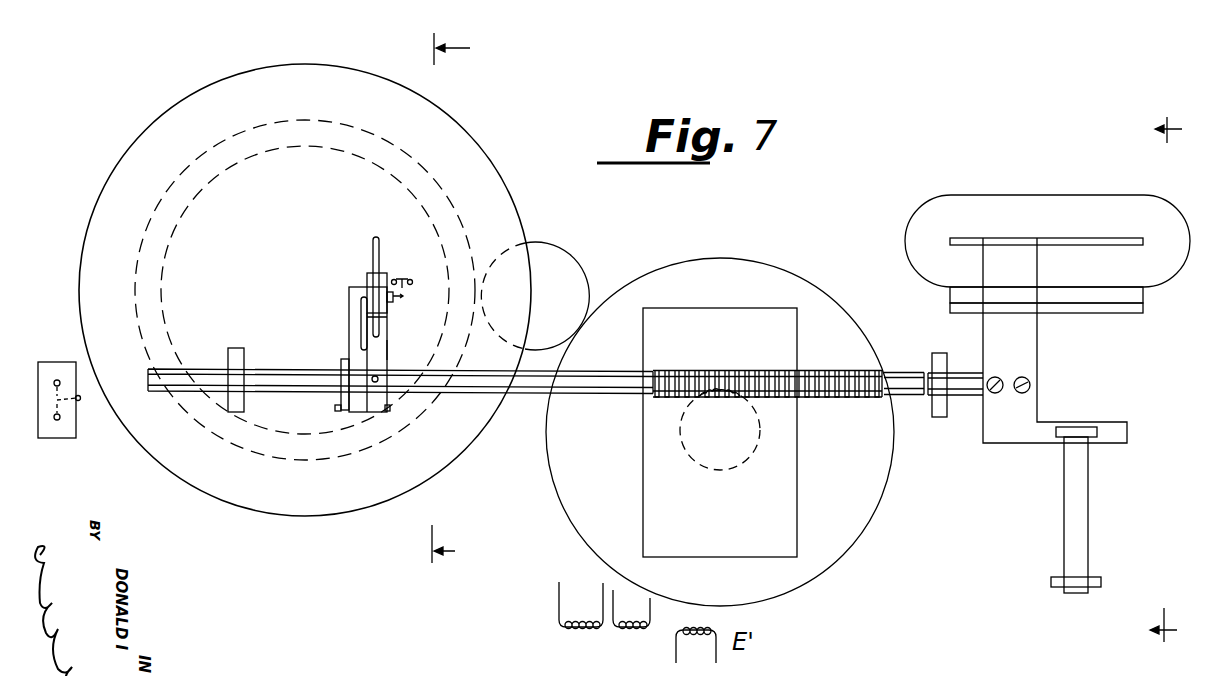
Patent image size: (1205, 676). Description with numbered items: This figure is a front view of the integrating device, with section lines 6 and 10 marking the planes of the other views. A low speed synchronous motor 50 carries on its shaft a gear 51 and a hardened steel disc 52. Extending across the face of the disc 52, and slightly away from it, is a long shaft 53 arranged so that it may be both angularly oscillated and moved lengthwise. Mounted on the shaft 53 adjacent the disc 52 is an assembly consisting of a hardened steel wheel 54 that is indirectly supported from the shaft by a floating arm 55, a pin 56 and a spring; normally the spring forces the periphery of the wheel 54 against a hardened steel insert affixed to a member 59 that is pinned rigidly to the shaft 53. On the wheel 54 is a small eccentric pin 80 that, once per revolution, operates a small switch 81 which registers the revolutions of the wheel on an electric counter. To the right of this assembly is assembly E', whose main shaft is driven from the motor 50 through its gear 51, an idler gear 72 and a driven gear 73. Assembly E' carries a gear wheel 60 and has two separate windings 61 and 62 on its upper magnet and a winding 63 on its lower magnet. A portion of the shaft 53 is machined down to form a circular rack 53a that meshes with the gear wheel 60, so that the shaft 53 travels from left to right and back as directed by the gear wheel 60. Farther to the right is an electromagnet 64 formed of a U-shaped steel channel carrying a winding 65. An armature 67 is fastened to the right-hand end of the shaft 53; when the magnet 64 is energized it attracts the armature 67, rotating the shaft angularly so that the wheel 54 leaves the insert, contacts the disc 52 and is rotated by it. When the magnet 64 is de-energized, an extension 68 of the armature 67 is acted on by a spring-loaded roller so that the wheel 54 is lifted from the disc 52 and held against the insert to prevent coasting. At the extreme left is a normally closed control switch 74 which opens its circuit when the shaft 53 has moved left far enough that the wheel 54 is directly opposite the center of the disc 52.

The low speed synchronous motor 50 is at (340, 152).
The gear 51 is at (355, 126).
The hardened steel disc 52 is at (428, 99).
The long shaft 53 is at (267, 368).
The circular rack 53a is at (860, 370).
The hardened steel wheel 54 is at (373, 242).
The floating arm 55 is at (349, 306).
The pin 56 is at (337, 410).
The member 59 is at (392, 352).
The gear wheel 60 is at (701, 450).
The winding 61 is at (581, 617).
The winding 62 is at (631, 621).
The winding 63 is at (696, 635).
The electromagnet 64 is at (1123, 240).
The winding 65 is at (1018, 200).
The armature 67 is at (1035, 355).
The extension 68 is at (1033, 444).
The idler gear 72 is at (567, 257).
The driven gear 73 is at (722, 260).
The control switch 74 is at (58, 440).
The eccentric pin 80 is at (392, 303).
The switch 81 is at (408, 280).
The section line 6 is at (453, 298).
The section line 10 is at (1153, 379).